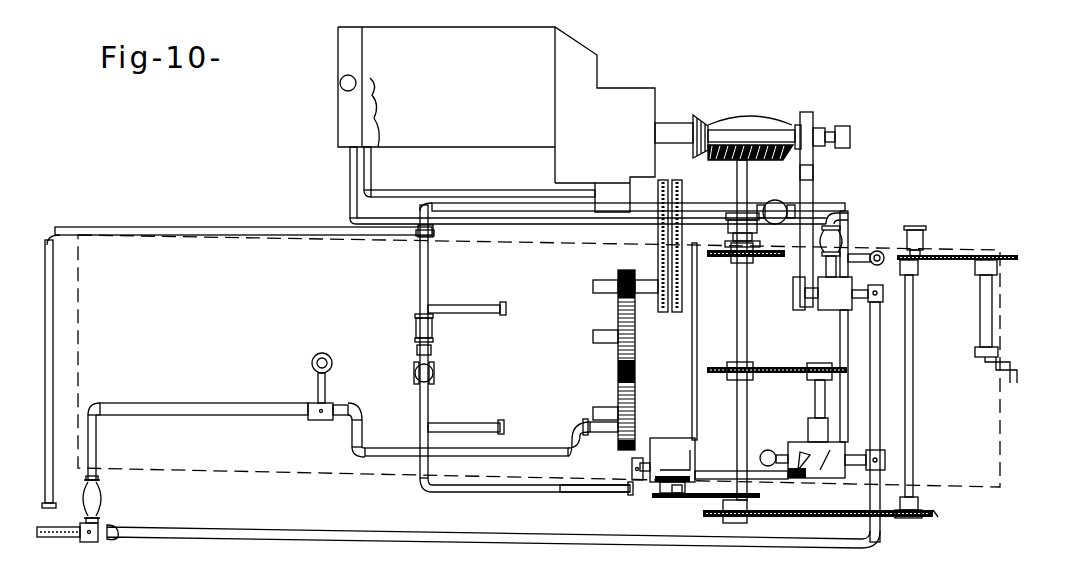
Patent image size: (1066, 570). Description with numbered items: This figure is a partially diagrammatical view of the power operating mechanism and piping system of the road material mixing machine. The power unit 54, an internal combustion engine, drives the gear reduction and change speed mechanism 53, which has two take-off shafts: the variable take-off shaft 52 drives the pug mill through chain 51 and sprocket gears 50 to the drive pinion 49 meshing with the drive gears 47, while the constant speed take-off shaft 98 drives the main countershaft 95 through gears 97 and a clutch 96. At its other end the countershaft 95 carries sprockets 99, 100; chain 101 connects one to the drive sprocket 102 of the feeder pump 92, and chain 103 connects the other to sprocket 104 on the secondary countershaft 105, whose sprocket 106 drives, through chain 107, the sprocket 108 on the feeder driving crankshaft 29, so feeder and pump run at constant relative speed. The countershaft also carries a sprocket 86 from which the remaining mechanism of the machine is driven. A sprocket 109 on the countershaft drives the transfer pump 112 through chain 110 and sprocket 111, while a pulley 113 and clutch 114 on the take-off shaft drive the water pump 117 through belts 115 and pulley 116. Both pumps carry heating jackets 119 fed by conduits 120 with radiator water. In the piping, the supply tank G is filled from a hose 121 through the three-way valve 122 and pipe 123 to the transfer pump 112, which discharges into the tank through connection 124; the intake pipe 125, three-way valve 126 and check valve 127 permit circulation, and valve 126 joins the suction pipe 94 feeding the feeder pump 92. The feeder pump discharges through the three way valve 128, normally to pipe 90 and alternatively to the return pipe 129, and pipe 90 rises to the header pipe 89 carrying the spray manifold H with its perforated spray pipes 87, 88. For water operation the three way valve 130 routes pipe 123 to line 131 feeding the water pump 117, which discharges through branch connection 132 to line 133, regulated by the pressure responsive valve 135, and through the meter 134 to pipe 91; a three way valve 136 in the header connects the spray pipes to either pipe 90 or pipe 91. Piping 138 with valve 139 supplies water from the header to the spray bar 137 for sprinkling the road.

The crankshaft 29 is at (980, 312).
The drive gears 47 is at (635, 380).
The drive pinion 49 is at (625, 270).
The sprocket gears 50 is at (667, 312).
The chain 51 is at (694, 262).
The power take-off shaft 52 is at (660, 180).
The gear reduction and change speed mechanism 53 is at (590, 163).
The power unit 54 is at (540, 52).
The gear 86 is at (785, 256).
The spray pipe 87 is at (470, 423).
The spray pipe 88 is at (487, 314).
The header pipe 89 is at (428, 276).
The pipe 90 is at (570, 493).
The pipe 91 is at (726, 218).
The feeder pump 92 is at (690, 460).
The suction pipe 94 is at (405, 448).
The main countershaft 95 is at (747, 295).
The clutch 96 is at (760, 232).
The gears 97 is at (795, 137).
The power take-off shaft 98 is at (662, 127).
The sprocket 99 is at (762, 495).
The sprocket 100 is at (700, 514).
The chain 101 is at (680, 498).
The drive sprocket 102 is at (645, 497).
The chain 103 is at (833, 518).
The sprocket 104 is at (940, 520).
The secondary countershaft 105 is at (913, 402).
The sprocket 106 is at (905, 235).
The chain 107 is at (968, 262).
The sprocket 108 is at (1018, 257).
The sprocket 109 is at (707, 367).
The chain 110 is at (790, 367).
The sprocket 111 is at (832, 375).
The transfer pump 112 is at (798, 470).
The pulley 113 is at (812, 118).
The clutch 114 is at (836, 128).
The belts 115 is at (818, 173).
The pulley 116 is at (800, 312).
The water pump 117 is at (836, 310).
The heating jackets 119 is at (800, 480).
The conduits 120 is at (368, 216).
The hose 121 is at (65, 538).
The three-way valve 122 is at (92, 543).
The pipe 123 is at (302, 538).
The connection 124 is at (768, 450).
The intake pipe 125 is at (173, 388).
The three-way valve 126 is at (325, 420).
The check valve 127 is at (100, 494).
The three way valve 128 is at (632, 474).
The return pipe 129 is at (632, 450).
The three way valve 130 is at (895, 448).
The line 131 is at (880, 405).
The branch connection 132 is at (850, 282).
The line 133 is at (878, 252).
The meter 134 is at (778, 203).
The pressure responsive valve 135 is at (846, 245).
The three way valve 136 is at (417, 380).
The spray bar 137 is at (45, 366).
The piping 138 is at (253, 212).
The valve 139 is at (422, 247).
The supply tank G is at (348, 482).
The spray manifold H is at (490, 305).